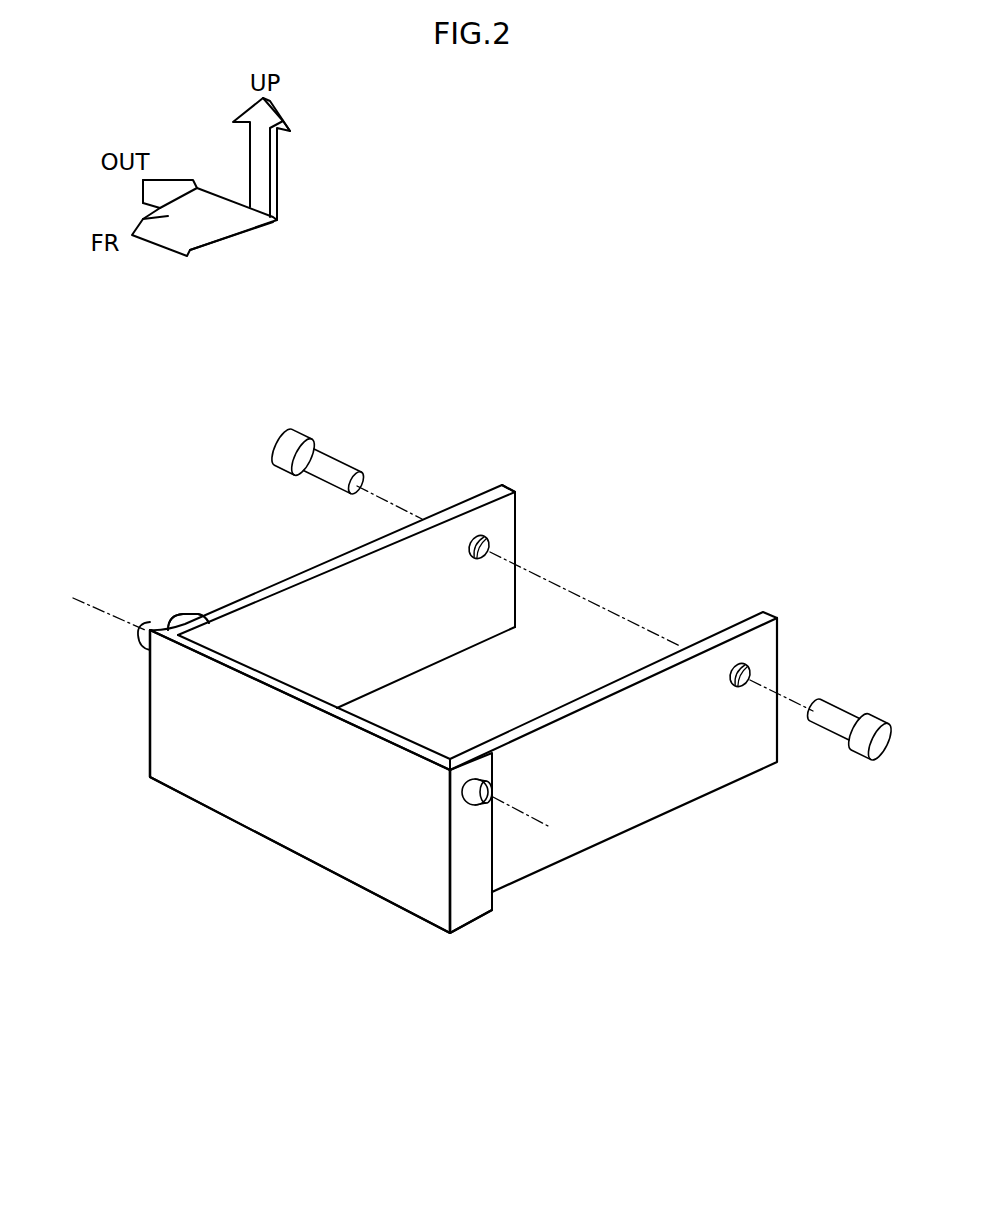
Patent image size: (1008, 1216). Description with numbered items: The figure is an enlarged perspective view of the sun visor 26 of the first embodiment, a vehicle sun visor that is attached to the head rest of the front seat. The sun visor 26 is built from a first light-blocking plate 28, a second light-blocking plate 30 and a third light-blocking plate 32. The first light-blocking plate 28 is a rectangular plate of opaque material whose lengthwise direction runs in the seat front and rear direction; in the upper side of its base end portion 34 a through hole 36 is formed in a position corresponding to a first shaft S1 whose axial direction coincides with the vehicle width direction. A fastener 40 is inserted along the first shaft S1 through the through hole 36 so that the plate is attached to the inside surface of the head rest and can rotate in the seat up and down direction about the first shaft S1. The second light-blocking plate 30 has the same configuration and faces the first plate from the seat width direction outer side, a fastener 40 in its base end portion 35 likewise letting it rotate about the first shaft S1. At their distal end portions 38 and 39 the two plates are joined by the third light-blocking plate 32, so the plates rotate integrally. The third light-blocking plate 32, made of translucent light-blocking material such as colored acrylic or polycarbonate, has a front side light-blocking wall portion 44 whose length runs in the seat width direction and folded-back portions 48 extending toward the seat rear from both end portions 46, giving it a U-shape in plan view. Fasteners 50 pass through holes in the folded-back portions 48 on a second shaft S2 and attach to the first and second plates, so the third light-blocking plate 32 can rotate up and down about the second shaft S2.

The sun visor 26 is at (228, 522).
The first light-blocking plate 28 is at (566, 703).
The second light-blocking plate 30 is at (302, 578).
The third light-blocking plate 32 is at (362, 872).
The base end portion 34 is at (765, 658).
The base end portion 35 is at (505, 532).
The through hole 36 is at (482, 540).
The distal end portion 38 is at (463, 752).
The distal end portion 39 is at (192, 620).
The fastener 40 is at (295, 435).
The front side light-blocking wall portion 44 is at (280, 787).
The end portion 46 is at (147, 757).
The folded-back portion 48 is at (172, 622).
The fastener 50 is at (143, 642).
The first shaft S1 is at (602, 603).
The second shaft S2 is at (95, 607).